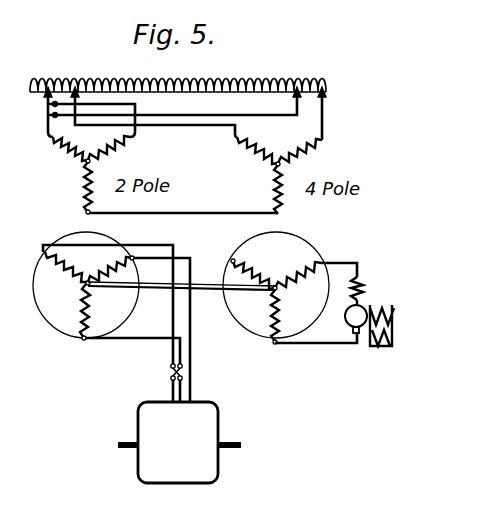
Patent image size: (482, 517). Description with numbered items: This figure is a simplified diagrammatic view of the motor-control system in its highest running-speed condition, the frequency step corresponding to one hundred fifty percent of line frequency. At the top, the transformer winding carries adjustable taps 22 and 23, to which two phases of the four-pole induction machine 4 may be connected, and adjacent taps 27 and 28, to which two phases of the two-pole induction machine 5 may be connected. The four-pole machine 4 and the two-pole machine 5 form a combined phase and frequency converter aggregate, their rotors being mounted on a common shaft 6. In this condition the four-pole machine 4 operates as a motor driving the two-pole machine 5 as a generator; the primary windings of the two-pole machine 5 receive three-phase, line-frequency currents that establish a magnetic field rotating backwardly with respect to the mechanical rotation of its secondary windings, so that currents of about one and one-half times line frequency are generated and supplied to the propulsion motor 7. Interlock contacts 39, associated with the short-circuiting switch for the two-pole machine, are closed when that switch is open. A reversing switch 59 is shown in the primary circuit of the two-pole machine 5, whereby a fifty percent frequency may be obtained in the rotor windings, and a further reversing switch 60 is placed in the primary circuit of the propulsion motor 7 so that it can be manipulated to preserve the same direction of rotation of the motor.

The reversing switch 59 is at (47, 118).
The adjustable transformer tap 28 is at (47, 100).
The adjustable tap 23 is at (136, 104).
The adjustable transformer tap 27 is at (296, 107).
The adjustable tap 22 is at (322, 112).
The two-pole induction machine 5 is at (52, 235).
The four-pole induction machine 4 is at (347, 251).
The common shaft 6 is at (177, 284).
The interlock contacts 39 is at (360, 311).
The reversing switch 60 is at (169, 371).
The propulsion motor 7 is at (182, 455).